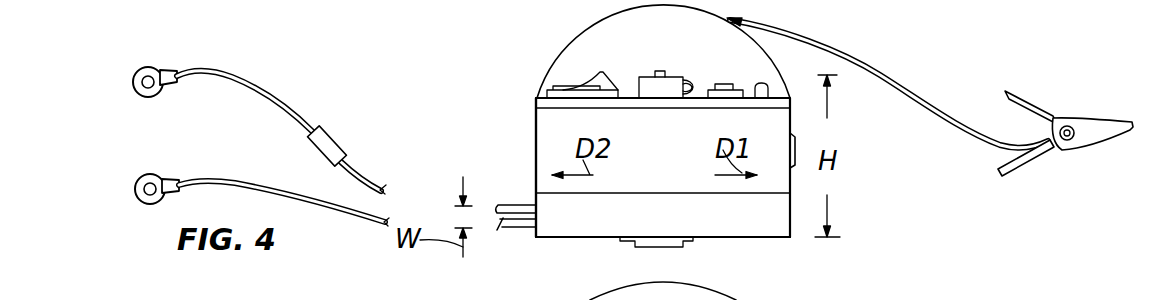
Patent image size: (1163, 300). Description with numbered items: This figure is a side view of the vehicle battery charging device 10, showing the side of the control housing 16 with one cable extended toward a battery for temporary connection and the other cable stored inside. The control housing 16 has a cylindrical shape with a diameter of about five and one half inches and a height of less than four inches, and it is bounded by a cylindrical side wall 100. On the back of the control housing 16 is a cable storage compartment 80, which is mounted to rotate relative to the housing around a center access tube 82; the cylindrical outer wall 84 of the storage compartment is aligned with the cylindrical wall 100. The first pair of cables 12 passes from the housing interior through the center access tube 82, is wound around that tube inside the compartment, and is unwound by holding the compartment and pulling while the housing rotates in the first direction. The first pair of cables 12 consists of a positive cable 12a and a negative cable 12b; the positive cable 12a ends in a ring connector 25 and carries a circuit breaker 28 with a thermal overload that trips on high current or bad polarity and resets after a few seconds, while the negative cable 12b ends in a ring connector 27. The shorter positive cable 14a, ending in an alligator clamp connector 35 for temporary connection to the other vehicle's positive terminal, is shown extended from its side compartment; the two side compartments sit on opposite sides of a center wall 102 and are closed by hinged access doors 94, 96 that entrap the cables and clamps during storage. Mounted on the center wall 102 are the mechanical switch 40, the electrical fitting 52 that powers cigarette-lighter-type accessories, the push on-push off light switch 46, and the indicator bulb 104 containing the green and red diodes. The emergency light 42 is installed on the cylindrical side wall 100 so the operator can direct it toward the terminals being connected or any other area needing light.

The vehicle battery charging device 10 is at (944, 182).
The first pair of cables 12 is at (521, 204).
The positive cable 12a is at (258, 90).
The negative cable 12b is at (263, 188).
The positive cable 14a is at (930, 107).
The control housing 16 is at (852, 168).
The ring connector 25 is at (151, 66).
The ring connector 27 is at (152, 174).
The circuit breaker 28 is at (328, 136).
The alligator clamp connector 35 is at (1092, 117).
The mechanical switch 40 is at (577, 83).
The emergency light 42 is at (797, 166).
The light switch 46 is at (727, 88).
The electrical fitting 52 is at (647, 80).
The cable storage compartment 80 is at (562, 226).
The center access tube 82 is at (688, 247).
The cylindrical outer wall 84 is at (766, 225).
The hinged access door 94 is at (745, 50).
The hinged access door 96 is at (585, 106).
The cylindrical side wall 100 is at (535, 147).
The center wall 102 is at (568, 94).
The indicator bulb 104 is at (762, 80).